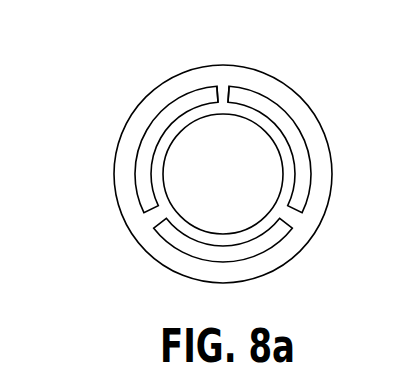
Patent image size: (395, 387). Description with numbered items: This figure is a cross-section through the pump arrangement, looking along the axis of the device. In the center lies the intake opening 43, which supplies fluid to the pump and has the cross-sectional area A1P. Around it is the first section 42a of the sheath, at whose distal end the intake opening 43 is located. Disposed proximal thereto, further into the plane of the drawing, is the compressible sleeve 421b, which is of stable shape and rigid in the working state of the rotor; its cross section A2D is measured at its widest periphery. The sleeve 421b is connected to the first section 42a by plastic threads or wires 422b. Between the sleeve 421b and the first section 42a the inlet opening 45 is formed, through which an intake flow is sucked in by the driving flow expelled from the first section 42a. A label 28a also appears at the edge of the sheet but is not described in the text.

The compressible sleeve 421b is at (240, 63).
The plastic threads or wires 422b is at (217, 90).
The intake opening 43 is at (252, 145).
The inlet opening 45 is at (173, 110).
The first section of the sheath 42a is at (282, 198).
The cross section of the sleeve A2D is at (127, 143).
The cross-sectional area of the intake opening A1P is at (175, 177).
The component of adjacent figure 28a is at (380, 386).